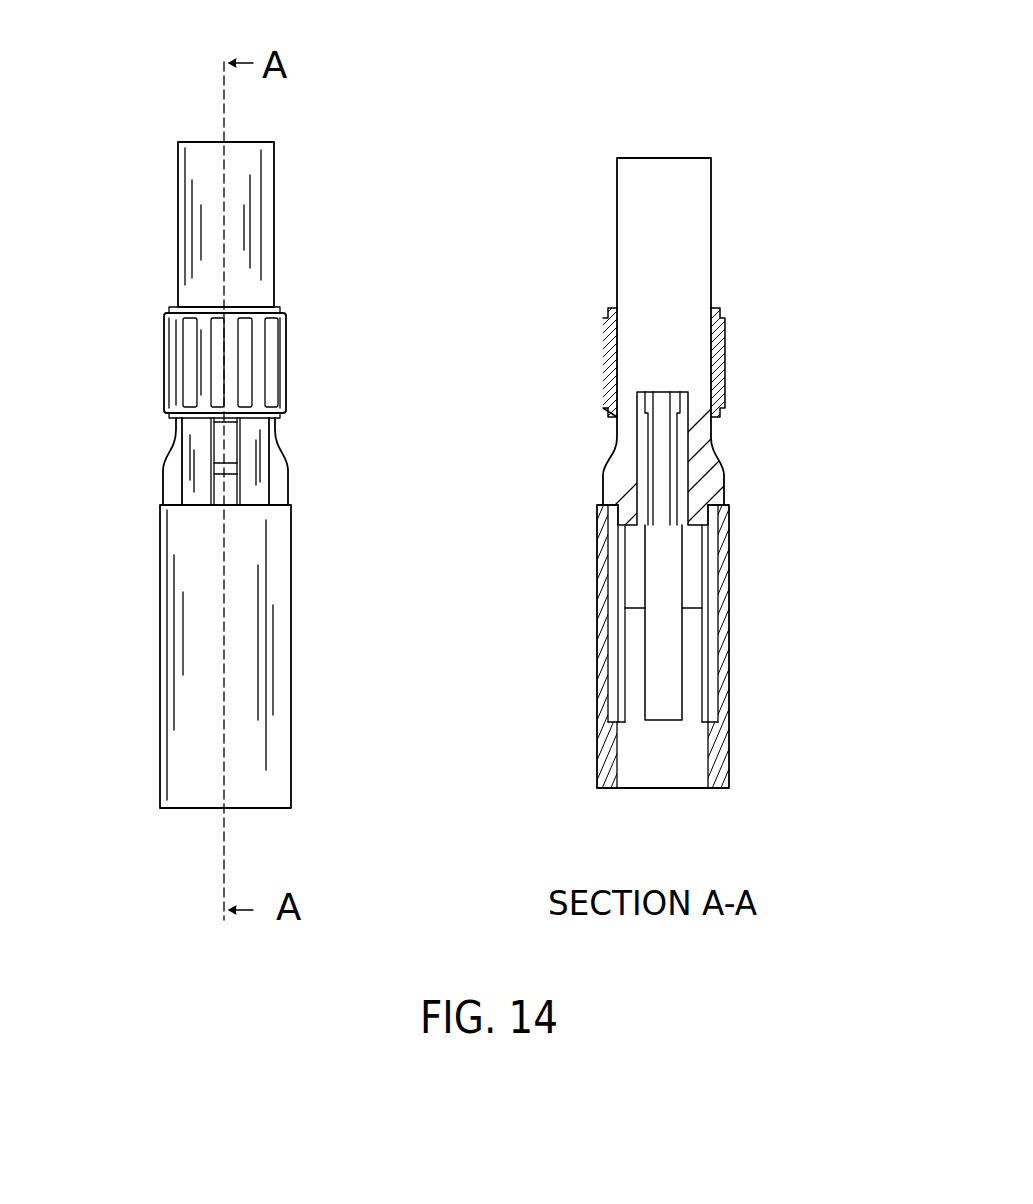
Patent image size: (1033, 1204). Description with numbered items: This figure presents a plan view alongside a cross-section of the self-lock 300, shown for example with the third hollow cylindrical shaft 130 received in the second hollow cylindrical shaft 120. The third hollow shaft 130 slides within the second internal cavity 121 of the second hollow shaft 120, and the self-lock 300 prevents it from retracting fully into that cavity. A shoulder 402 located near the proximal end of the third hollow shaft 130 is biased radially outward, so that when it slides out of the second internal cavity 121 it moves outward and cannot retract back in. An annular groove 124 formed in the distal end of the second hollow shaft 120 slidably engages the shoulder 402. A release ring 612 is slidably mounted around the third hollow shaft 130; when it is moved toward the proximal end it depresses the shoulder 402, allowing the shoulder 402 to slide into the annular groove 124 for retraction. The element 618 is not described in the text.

The third hollow cylindrical shaft 130 is at (243, 161).
The release ring 612 is at (257, 378).
The shoulder 402 is at (280, 482).
The self-lock 300 is at (162, 500).
The second internal cavity 121 is at (277, 588).
The second hollow cylindrical shaft 120 is at (728, 597).
The inner sleeve 618 is at (613, 686).
The annular groove 124 is at (713, 670).